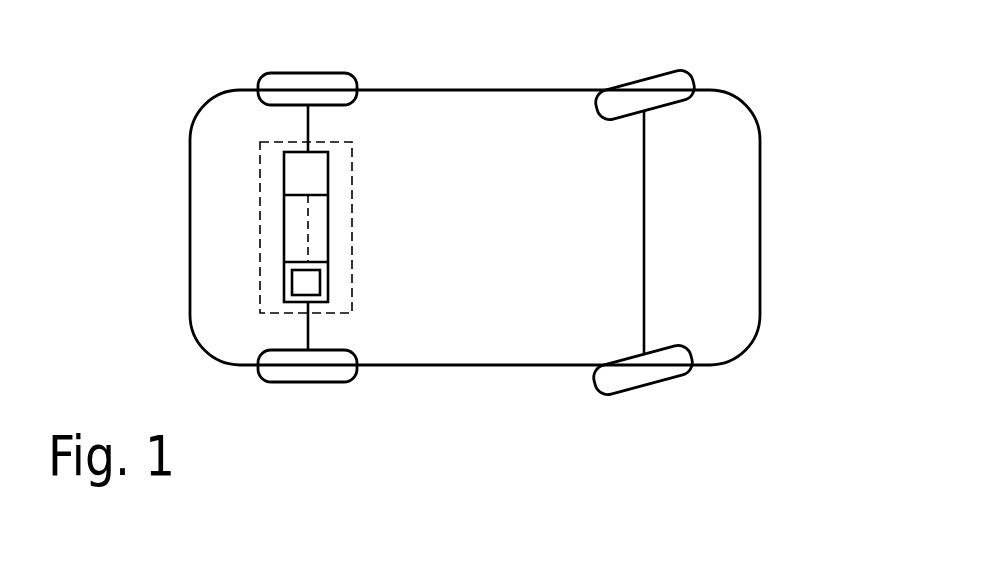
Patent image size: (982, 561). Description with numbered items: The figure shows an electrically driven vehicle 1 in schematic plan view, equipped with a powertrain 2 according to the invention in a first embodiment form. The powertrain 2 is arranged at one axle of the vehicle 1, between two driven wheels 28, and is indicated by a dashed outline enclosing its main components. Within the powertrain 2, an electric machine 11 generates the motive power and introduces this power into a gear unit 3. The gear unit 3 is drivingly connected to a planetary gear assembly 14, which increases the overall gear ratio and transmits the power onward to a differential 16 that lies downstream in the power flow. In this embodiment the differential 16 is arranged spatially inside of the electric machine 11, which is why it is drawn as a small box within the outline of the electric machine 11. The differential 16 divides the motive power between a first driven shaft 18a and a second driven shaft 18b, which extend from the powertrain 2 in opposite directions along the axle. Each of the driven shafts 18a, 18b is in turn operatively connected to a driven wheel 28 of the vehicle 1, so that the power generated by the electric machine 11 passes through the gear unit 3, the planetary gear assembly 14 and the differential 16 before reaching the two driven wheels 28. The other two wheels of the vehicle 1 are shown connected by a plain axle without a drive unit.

The vehicle 1 is at (745, 64).
The powertrain 2 is at (258, 207).
The gear unit 3 is at (330, 233).
The electric machine 11 is at (330, 283).
The planetary gear assembly 14 is at (330, 175).
The differential 16 is at (290, 283).
The first driven shaft 18a is at (306, 330).
The second driven shaft 18b is at (306, 119).
The driven wheel 28 is at (328, 72).